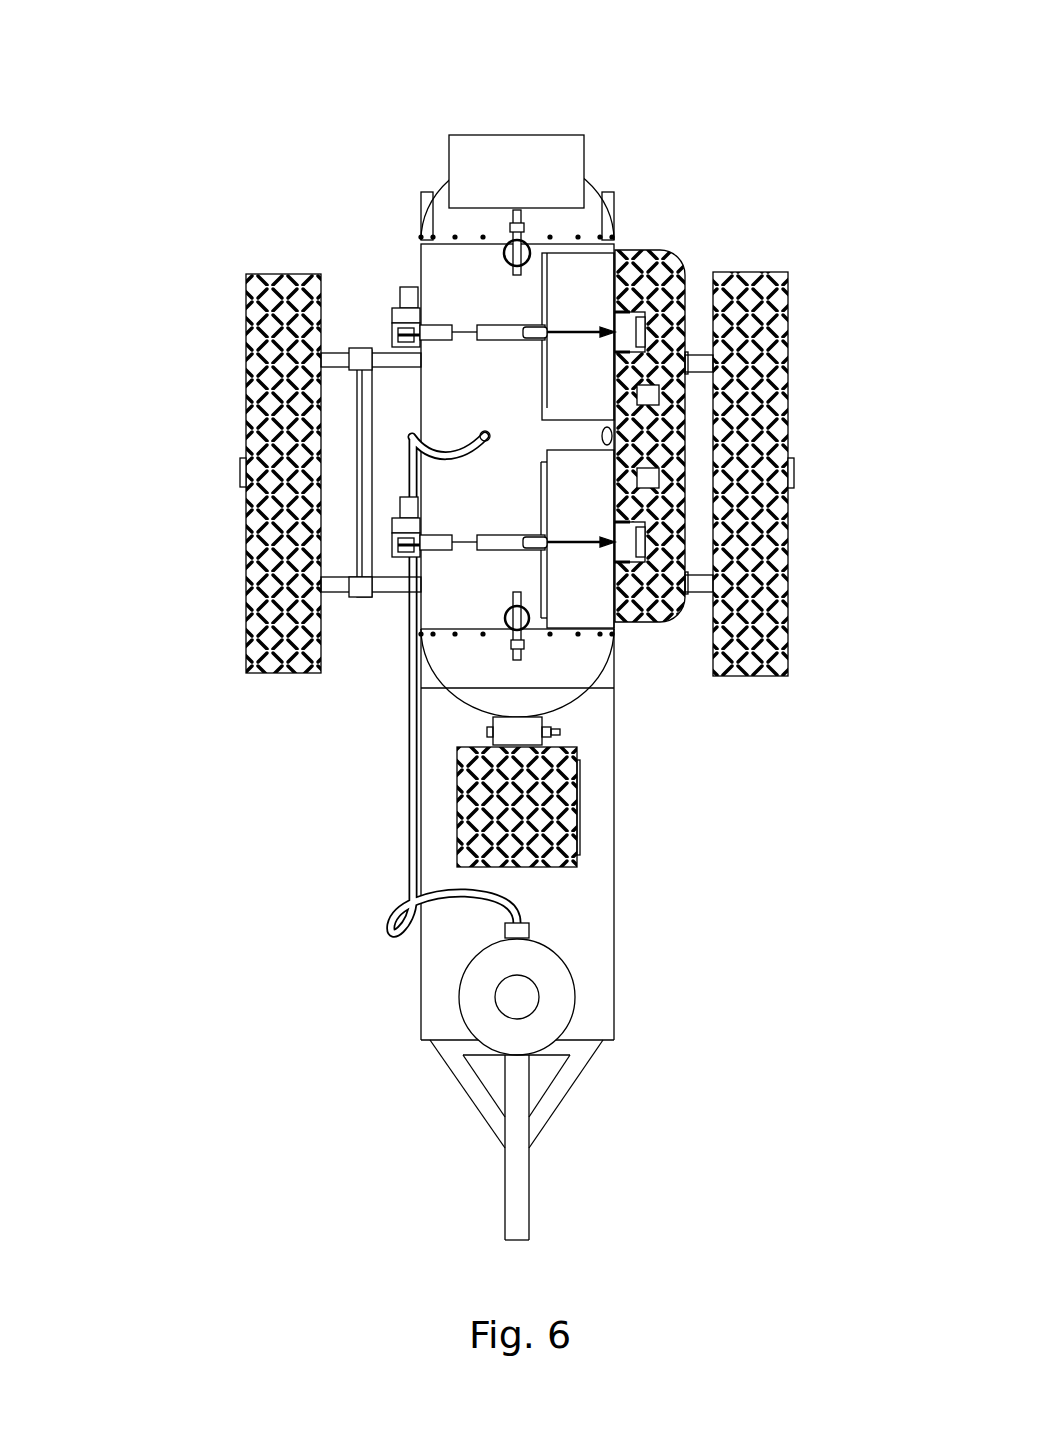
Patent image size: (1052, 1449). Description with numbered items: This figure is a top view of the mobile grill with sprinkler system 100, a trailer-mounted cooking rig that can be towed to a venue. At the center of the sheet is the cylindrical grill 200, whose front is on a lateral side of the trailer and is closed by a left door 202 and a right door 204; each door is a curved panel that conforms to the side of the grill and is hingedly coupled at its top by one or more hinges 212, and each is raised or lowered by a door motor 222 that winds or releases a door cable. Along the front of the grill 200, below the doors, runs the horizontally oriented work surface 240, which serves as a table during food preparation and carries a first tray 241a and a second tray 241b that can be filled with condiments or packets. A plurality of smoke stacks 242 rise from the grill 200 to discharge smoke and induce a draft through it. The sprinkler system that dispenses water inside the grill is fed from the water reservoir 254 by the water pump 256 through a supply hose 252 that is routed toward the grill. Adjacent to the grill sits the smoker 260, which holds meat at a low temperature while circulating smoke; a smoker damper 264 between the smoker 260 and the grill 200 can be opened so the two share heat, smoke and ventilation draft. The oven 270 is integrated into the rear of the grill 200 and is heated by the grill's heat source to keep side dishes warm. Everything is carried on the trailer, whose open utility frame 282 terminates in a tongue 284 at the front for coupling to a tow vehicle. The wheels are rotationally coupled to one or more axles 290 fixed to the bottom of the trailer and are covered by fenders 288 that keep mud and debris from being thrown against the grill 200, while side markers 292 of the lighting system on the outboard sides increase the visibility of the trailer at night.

The mobile grill with sprinkler system 100 is at (120, 178).
The grill 200 is at (478, 692).
The left door 202 is at (585, 600).
The right door 204 is at (592, 258).
The hinges 212 is at (540, 375).
The door motor 222 is at (395, 318).
The work surface 240 is at (678, 426).
The first tray 241a is at (636, 478).
The second tray 241b is at (636, 395).
The smoke stacks 242 is at (504, 247).
The supply hose 252 is at (392, 932).
The water reservoir 254 is at (575, 990).
The water pump 256 is at (530, 930).
The smoker 260 is at (480, 808).
The smoker damper 264 is at (560, 732).
The oven 270 is at (585, 148).
The frame 282 is at (585, 1065).
The tongue 284 is at (530, 1232).
The fenders 288 is at (782, 347).
The axles 290 is at (694, 362).
The side markers 292 is at (240, 472).